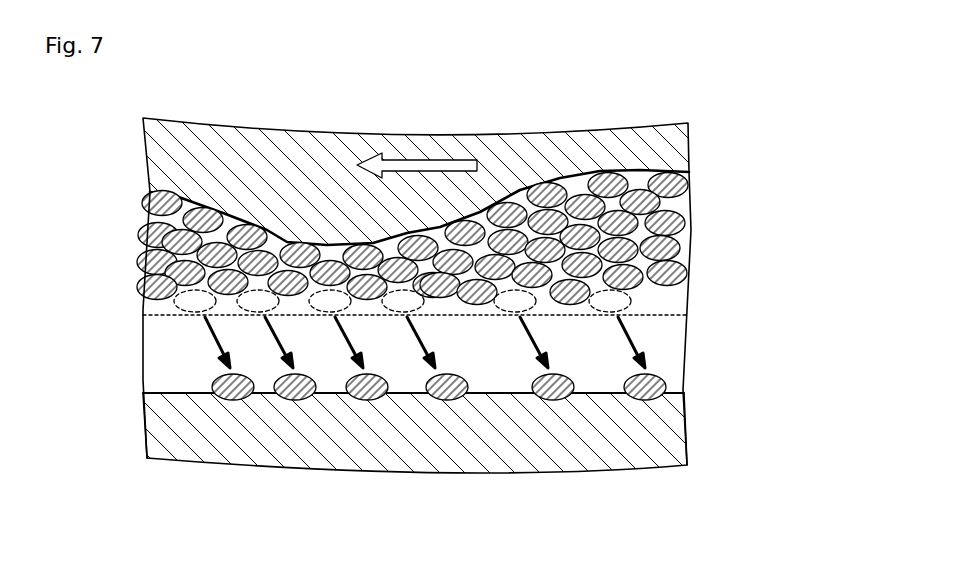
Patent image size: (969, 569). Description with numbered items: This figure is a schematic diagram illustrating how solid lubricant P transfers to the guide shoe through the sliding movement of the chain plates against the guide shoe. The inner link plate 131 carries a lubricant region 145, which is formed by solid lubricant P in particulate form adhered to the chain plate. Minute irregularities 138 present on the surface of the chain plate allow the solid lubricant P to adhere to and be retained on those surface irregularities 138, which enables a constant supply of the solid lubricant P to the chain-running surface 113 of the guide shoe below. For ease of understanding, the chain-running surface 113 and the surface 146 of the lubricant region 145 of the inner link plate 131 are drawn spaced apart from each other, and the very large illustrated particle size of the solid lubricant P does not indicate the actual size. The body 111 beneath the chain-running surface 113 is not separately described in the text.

The inner link plate 131 is at (306, 140).
The surface irregularities 138 is at (640, 178).
The lubricant region 145 is at (137, 193).
The surface of the lubricant region 146 is at (673, 315).
The chain-running surface 113 is at (170, 394).
The substrate 111 is at (293, 430).
The solid lubricant P is at (672, 273).